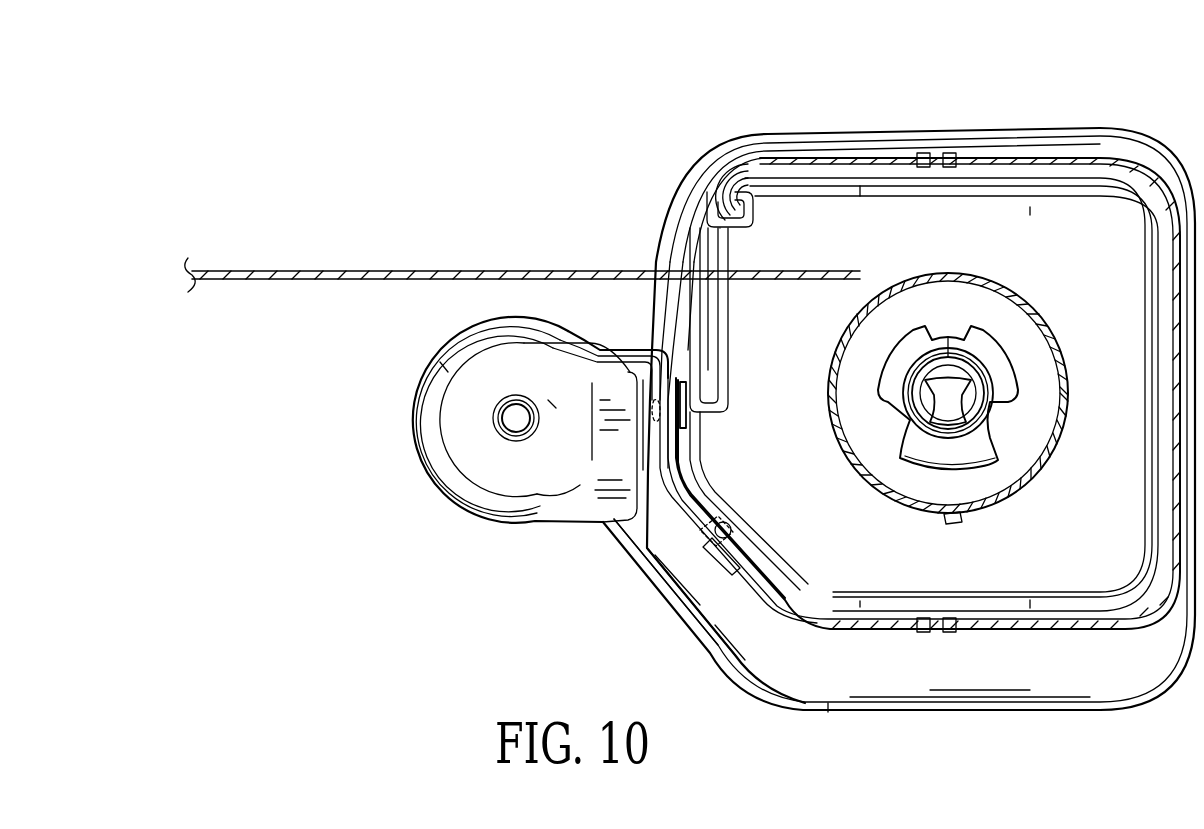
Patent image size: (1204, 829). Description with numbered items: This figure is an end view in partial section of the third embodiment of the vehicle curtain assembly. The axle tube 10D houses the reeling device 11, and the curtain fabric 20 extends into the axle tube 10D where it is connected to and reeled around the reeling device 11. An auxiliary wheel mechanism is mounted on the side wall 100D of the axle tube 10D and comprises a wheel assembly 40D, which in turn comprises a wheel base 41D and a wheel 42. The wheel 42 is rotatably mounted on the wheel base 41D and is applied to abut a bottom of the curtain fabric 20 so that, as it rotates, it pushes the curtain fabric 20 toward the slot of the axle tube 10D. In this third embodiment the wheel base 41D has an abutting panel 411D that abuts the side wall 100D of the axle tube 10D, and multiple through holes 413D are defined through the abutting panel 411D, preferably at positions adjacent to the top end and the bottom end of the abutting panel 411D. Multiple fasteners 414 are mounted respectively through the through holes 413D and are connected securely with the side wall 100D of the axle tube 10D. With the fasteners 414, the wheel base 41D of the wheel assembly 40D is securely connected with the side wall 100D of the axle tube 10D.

The axle tube 10D is at (990, 125).
The reeling device 11 is at (998, 330).
The curtain fabric 20 is at (326, 262).
The wheel assembly 40D is at (505, 454).
The wheel 42 is at (428, 445).
The wheel base 41D is at (592, 500).
The side wall 100D is at (687, 500).
The abutting panel 411D is at (672, 445).
The through holes 413D is at (688, 410).
The fasteners 414 is at (645, 360).